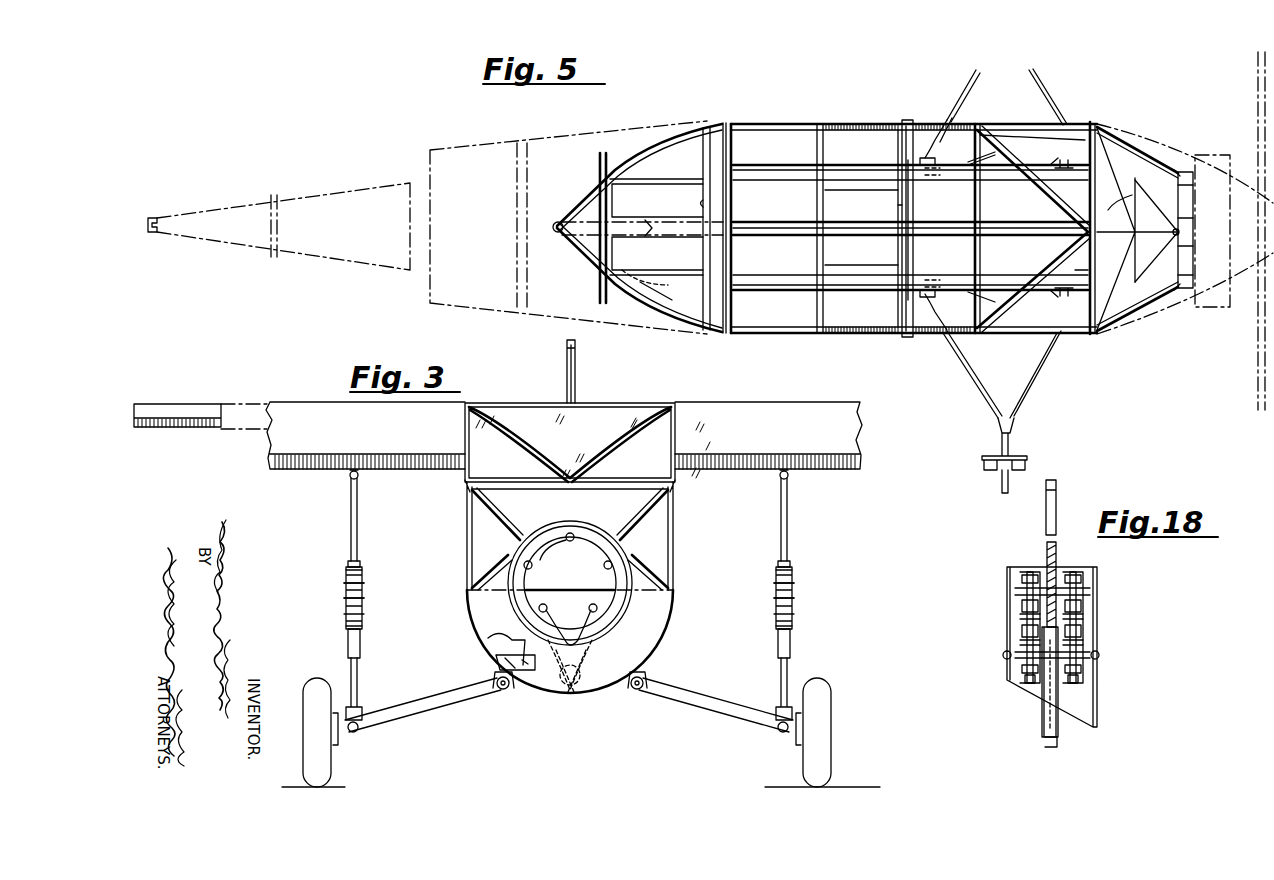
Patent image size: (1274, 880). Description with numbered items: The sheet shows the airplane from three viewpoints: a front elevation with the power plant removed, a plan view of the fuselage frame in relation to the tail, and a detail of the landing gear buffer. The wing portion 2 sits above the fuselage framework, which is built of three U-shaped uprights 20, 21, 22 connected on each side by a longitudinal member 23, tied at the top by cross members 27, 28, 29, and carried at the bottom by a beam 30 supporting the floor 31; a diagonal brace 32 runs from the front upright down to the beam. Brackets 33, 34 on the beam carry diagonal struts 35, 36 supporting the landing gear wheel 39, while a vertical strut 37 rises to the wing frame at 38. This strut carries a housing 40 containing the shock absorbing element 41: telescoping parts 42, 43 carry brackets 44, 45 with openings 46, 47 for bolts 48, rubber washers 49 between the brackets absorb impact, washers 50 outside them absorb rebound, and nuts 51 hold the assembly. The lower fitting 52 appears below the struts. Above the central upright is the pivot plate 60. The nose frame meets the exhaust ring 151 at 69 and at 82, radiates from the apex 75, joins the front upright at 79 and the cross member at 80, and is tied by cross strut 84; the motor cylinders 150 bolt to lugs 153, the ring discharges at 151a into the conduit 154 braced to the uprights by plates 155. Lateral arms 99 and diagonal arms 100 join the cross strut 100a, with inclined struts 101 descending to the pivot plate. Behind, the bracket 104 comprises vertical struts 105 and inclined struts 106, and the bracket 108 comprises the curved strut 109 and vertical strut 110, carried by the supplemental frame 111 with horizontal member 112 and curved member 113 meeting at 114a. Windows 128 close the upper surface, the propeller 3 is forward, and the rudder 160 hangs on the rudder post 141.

In FIG. 3, the wing portion 2 is at (250, 412).
In FIG. 5, the propeller 3 is at (1256, 78).
In FIG. 5, the front upright 20 is at (1090, 122).
In FIG. 5, the central upright 21 is at (915, 122).
In FIG. 5, the rear upright 22 is at (736, 122).
In FIG. 5, the longitudinal member 23 is at (770, 139).
In FIG. 5, the cross member 27 is at (1080, 266).
In FIG. 5, the cross member 28 is at (912, 253).
In FIG. 5, the cross member 29 is at (733, 252).
In FIG. 5, the beam 30 is at (855, 174).
In FIG. 3, the floor 31 is at (520, 640).
In FIG. 5, the diagonal brace 32 is at (968, 152).
In FIG. 5, the bracket 33 is at (938, 160).
In FIG. 5, the bracket 34 is at (1065, 160).
In FIG. 3, the bracket 34 is at (513, 690).
In FIG. 5, the diagonal strut 35 is at (972, 88).
In FIG. 5, the diagonal strut 36 is at (1043, 100).
In FIG. 3, the vertical strut 37 is at (357, 530).
In FIG. 18, the vertical strut 37 is at (1046, 524).
In FIG. 3, the wing frame connection 38 is at (358, 478).
In FIG. 3, the landing gear wheel 39 is at (314, 680).
In FIG. 18, the housing 40 is at (1095, 700).
In FIG. 3, the shock absorbing element 41 is at (380, 600).
In FIG. 18, the shock absorbing element 41 is at (1012, 554).
In FIG. 3, the telescoping part 42 is at (361, 641).
In FIG. 18, the telescoping part 42 is at (1059, 728).
In FIG. 3, the telescoping part 43 is at (361, 566).
In FIG. 18, the telescoping part 43 is at (1058, 570).
In FIG. 18, the bracket 44 is at (1018, 592).
In FIG. 18, the bracket 45 is at (1025, 660).
In FIG. 18, the opening 46 is at (1080, 600).
In FIG. 18, the opening 47 is at (1085, 655).
In FIG. 18, the bolt 48 is at (1020, 620).
In FIG. 3, the rubber washer 49 is at (345, 598).
In FIG. 18, the rubber washer 49 is at (1020, 640).
In FIG. 3, the washer 50 is at (346, 571).
In FIG. 18, the washer 50 is at (1022, 580).
In FIG. 18, the nut 51 is at (1028, 684).
In FIG. 5, the tail skid fitting 52 is at (1000, 480).
In FIG. 5, the pivot plate 60 is at (907, 118).
In FIG. 3, the pivot plate 60 is at (466, 486).
In FIG. 5, the strut junction 69 is at (1180, 170).
In FIG. 5, the apex 75 is at (1140, 187).
In FIG. 5, the attachment point 79 is at (1105, 128).
In FIG. 5, the junction 80 is at (1137, 229).
In FIG. 5, the junction 82 is at (1172, 233).
In FIG. 3, the cross strut 84 is at (570, 580).
In FIG. 5, the lateral arm 99 is at (998, 124).
In FIG. 5, the diagonal arm 100 is at (1050, 202).
In FIG. 5, the cross strut 100a is at (978, 212).
In FIG. 5, the inclined strut 101 is at (950, 120).
In FIG. 5, the bracket 104 is at (793, 122).
In FIG. 5, the vertical strut 105 is at (725, 121).
In FIG. 5, the inclined strut 106 is at (858, 121).
In FIG. 5, the bracket 108 is at (668, 146).
In FIG. 5, the curved inclined strut 109 is at (648, 158).
In FIG. 5, the vertical strut 110 is at (705, 125).
In FIG. 5, the supplemental frame 111 is at (596, 252).
In FIG. 5, the horizontal member 112 is at (667, 290).
In FIG. 5, the curved member 113 is at (646, 282).
In FIG. 5, the common meeting point 114a is at (558, 220).
In FIG. 3, the window 128 is at (587, 442).
In FIG. 5, the rudder post 141 is at (158, 225).
In FIG. 5, the radial cylinder 150 is at (1222, 155).
In FIG. 5, the exhaust ring 151 is at (1192, 209).
In FIG. 3, the exhaust ring 151 is at (612, 612).
In FIG. 3, the exhaust discharge 151a is at (598, 647).
In FIG. 3, the lug 153 is at (605, 570).
In FIG. 5, the exhaust conduit 154 is at (910, 232).
In FIG. 3, the exhaust conduit 154 is at (585, 662).
In FIG. 5, the plate 155 is at (704, 203).
In FIG. 3, the plate 155 is at (566, 688).
In FIG. 3, the rudder 160 is at (576, 368).